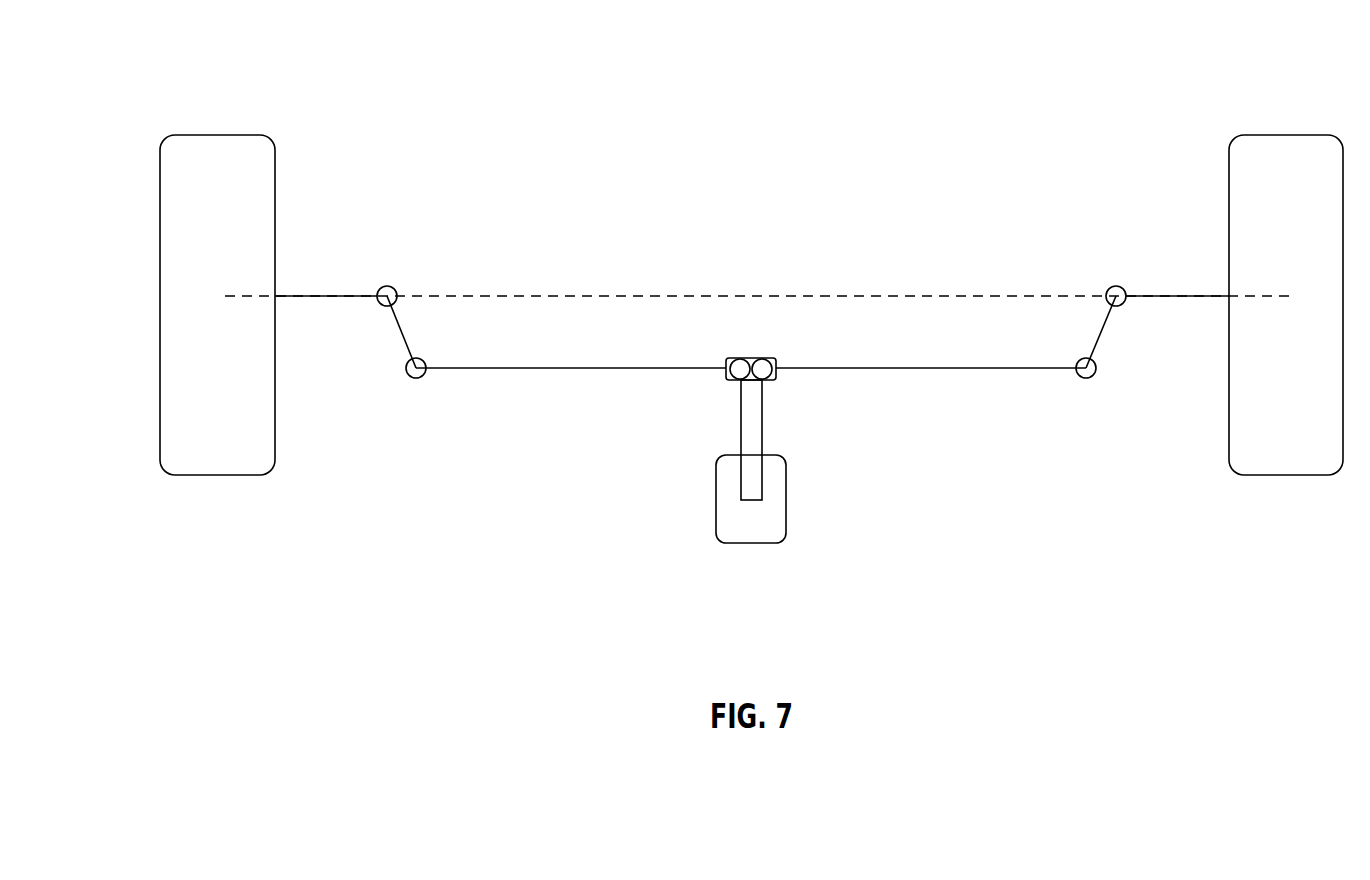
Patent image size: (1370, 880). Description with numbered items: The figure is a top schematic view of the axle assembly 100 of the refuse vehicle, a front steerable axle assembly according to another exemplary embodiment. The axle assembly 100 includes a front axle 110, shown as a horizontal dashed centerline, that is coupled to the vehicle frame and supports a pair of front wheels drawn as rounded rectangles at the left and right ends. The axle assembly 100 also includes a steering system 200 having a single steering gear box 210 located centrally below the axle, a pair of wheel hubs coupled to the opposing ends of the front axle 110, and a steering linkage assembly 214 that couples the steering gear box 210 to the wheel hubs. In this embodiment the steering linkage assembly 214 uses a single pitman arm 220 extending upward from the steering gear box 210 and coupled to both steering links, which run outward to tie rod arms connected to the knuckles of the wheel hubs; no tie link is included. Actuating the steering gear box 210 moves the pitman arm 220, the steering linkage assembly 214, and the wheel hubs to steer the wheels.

The axle assembly 100 is at (349, 68).
The front axle 110 is at (791, 296).
The steering system 200 is at (488, 541).
The steering gear box 210 is at (752, 544).
The steering linkage assembly 214 is at (570, 417).
The pitman arm 220 is at (766, 418).